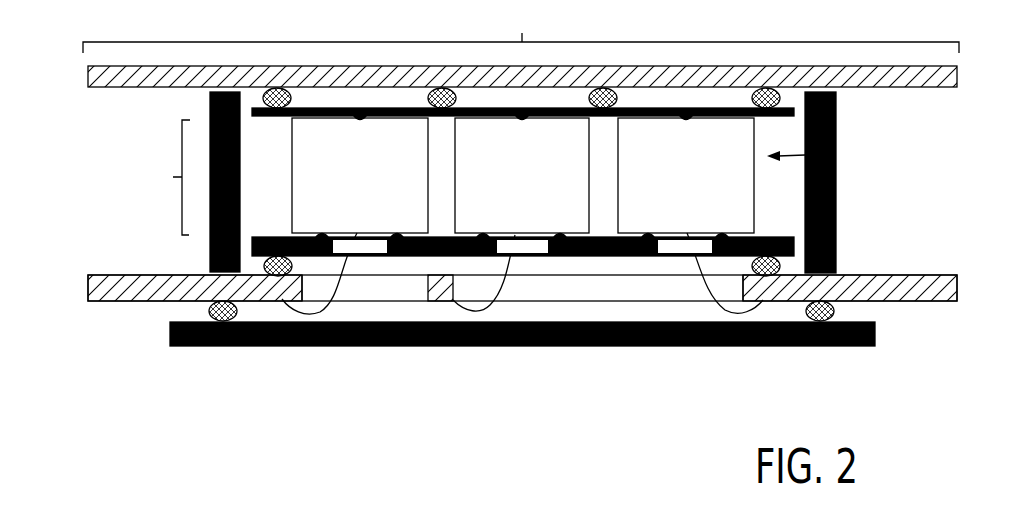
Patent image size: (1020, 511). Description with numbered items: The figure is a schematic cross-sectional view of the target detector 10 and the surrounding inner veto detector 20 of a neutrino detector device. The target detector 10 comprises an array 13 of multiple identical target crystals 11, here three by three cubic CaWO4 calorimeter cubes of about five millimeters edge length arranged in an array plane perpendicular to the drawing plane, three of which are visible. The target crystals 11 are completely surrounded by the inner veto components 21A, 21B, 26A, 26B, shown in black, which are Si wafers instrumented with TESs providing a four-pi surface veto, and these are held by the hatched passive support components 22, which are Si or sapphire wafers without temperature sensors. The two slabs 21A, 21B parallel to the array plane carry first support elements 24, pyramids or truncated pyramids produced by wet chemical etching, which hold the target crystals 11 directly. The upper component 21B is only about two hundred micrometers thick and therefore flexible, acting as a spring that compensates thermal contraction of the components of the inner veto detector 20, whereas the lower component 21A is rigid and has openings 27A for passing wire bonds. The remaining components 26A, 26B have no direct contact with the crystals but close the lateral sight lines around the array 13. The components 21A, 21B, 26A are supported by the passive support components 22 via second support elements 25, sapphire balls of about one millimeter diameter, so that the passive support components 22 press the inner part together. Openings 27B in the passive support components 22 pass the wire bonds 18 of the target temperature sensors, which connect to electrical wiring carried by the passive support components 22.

The target detector 10 is at (165, 193).
The target crystal 11 is at (371, 188).
The array of target crystals 13 is at (837, 133).
The wire bonds 18 is at (500, 292).
The inner veto detector 20 is at (536, 25).
The inner veto component 21A is at (523, 320).
The inner veto component 21B is at (713, 108).
The passive support component 22 is at (137, 77).
The first support element 24 is at (520, 119).
The second support element 25 is at (267, 89).
The inner veto component 26A is at (212, 220).
The inner veto component 26B is at (458, 347).
The opening 27A is at (528, 248).
The opening 27B is at (383, 285).